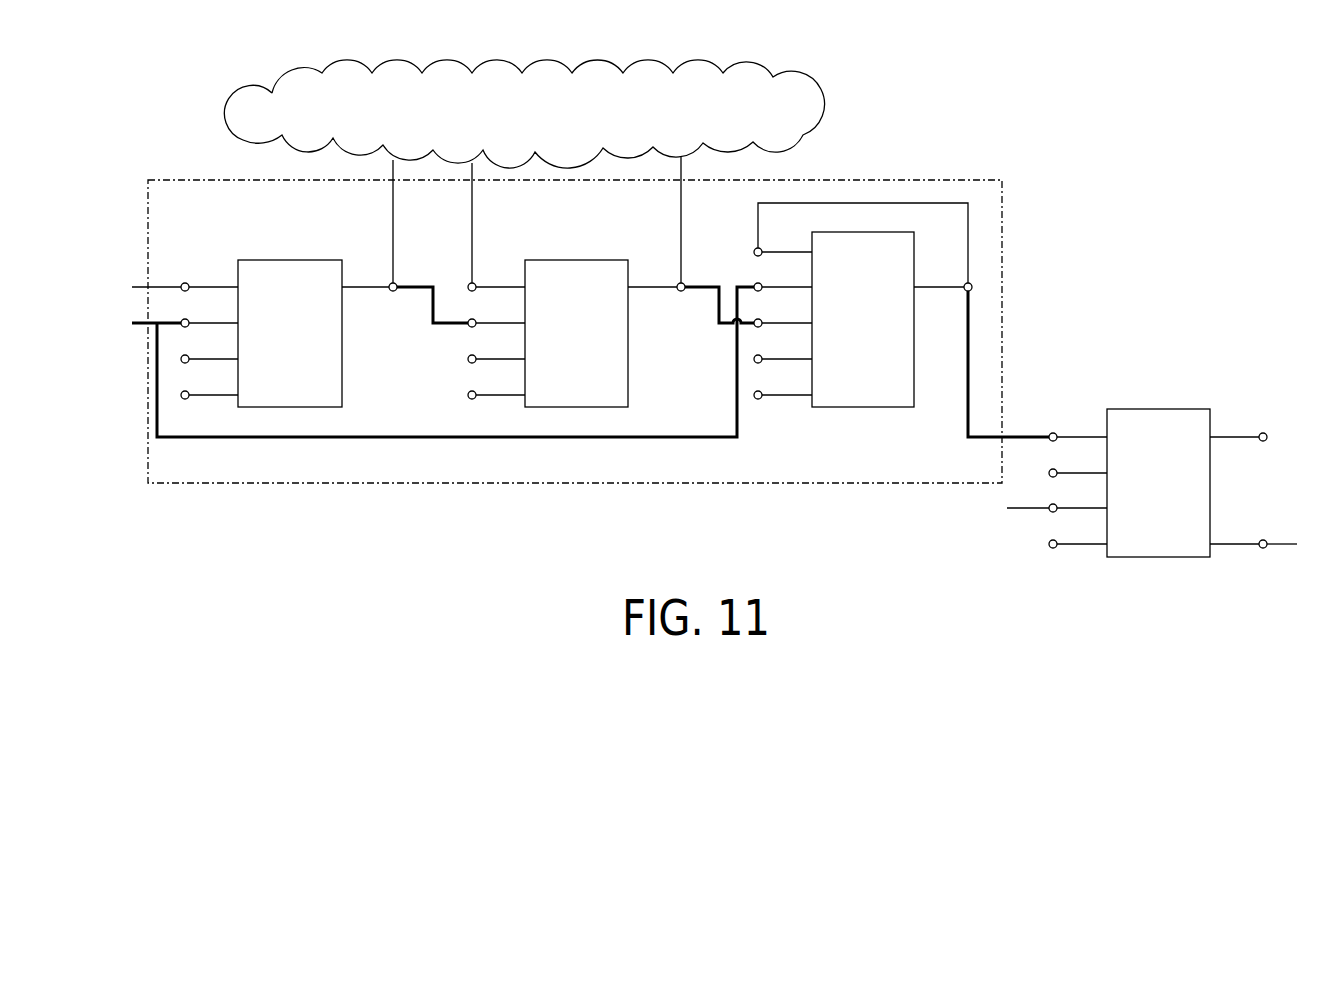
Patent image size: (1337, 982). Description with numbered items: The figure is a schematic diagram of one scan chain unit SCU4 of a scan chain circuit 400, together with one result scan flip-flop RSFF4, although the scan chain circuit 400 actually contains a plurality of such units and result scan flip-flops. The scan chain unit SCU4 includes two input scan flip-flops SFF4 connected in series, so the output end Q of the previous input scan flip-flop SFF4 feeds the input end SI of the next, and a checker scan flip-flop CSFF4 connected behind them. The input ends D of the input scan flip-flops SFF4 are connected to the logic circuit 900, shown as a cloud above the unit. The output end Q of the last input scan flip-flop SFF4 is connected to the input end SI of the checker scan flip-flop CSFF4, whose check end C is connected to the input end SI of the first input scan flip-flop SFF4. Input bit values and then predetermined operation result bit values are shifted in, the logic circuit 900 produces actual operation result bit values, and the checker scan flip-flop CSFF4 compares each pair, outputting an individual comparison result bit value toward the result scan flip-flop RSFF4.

The logic circuit 900 is at (620, 122).
The scan chain circuit 400 is at (1237, 262).
The scan chain unit SCU4 is at (1002, 273).
The input scan flip-flop SFF4 is at (320, 357).
The checker scan flip-flop CSFF4 is at (903, 359).
The result scan flip-flop RSFF4 is at (1127, 409).